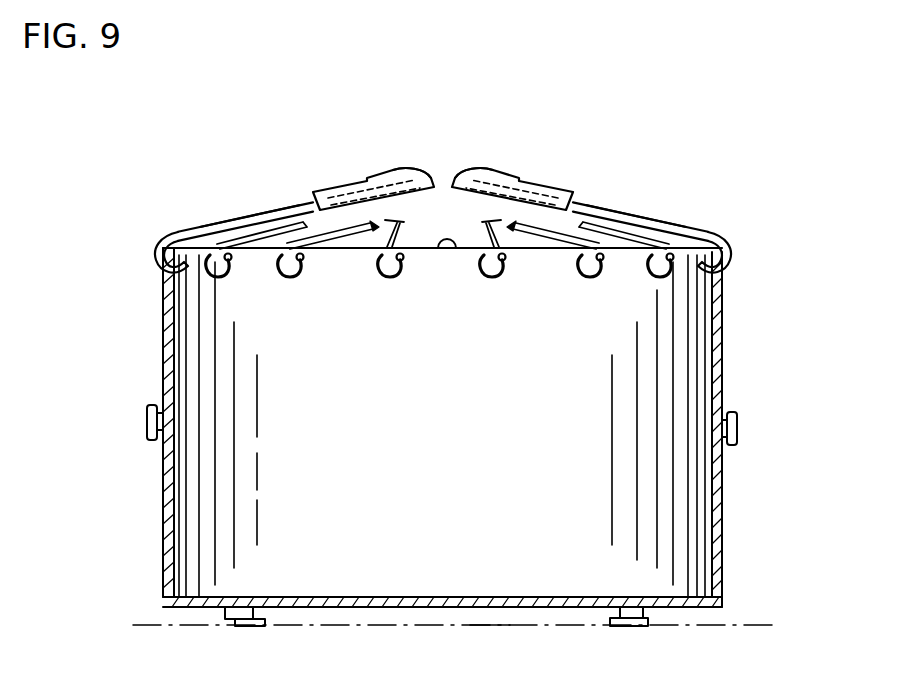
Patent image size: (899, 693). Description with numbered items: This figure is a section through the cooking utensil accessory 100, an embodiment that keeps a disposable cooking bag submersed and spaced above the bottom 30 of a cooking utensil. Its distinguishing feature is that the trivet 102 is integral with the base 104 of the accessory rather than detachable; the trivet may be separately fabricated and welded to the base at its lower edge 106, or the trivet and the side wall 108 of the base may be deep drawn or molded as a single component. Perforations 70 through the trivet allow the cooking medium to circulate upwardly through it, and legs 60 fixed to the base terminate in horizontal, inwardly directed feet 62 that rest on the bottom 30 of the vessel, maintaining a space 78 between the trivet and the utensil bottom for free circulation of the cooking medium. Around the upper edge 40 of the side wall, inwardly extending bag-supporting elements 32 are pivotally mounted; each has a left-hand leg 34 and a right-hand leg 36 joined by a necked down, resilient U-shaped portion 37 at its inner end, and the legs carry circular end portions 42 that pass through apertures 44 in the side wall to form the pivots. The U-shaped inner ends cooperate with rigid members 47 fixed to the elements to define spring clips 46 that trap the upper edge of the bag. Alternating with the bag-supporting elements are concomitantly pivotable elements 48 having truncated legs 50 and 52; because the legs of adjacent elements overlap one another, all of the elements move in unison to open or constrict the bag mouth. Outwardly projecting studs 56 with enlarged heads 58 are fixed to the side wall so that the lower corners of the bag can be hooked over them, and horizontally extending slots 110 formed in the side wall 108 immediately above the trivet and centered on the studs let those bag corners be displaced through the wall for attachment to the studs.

The bottom 30 is at (330, 626).
The bag-supporting element 32 is at (279, 196).
The left-hand leg 34 is at (670, 222).
The right-hand leg 36 is at (237, 219).
The U-shaped portion 37 is at (360, 177).
The upper edge 40 is at (436, 252).
The circular end portion 42 is at (217, 273).
The aperture 44 is at (289, 278).
The spring clip 46 is at (417, 160).
The rigid member 47 is at (393, 170).
The pivotable element 48 is at (514, 210).
The truncated leg 50 is at (557, 235).
The truncated leg 52 is at (335, 236).
The stud 56 is at (135, 414).
The enlarged head 58 is at (147, 406).
The leg 60 is at (209, 617).
The foot 62 is at (250, 628).
The perforation 70 is at (347, 597).
The space 78 is at (488, 615).
The cooking utensil accessory 100 is at (140, 207).
The trivet 102 is at (472, 597).
The base 104 is at (740, 352).
The lower edge 106 is at (410, 607).
The side wall 108 is at (465, 426).
The slot 110 is at (719, 597).